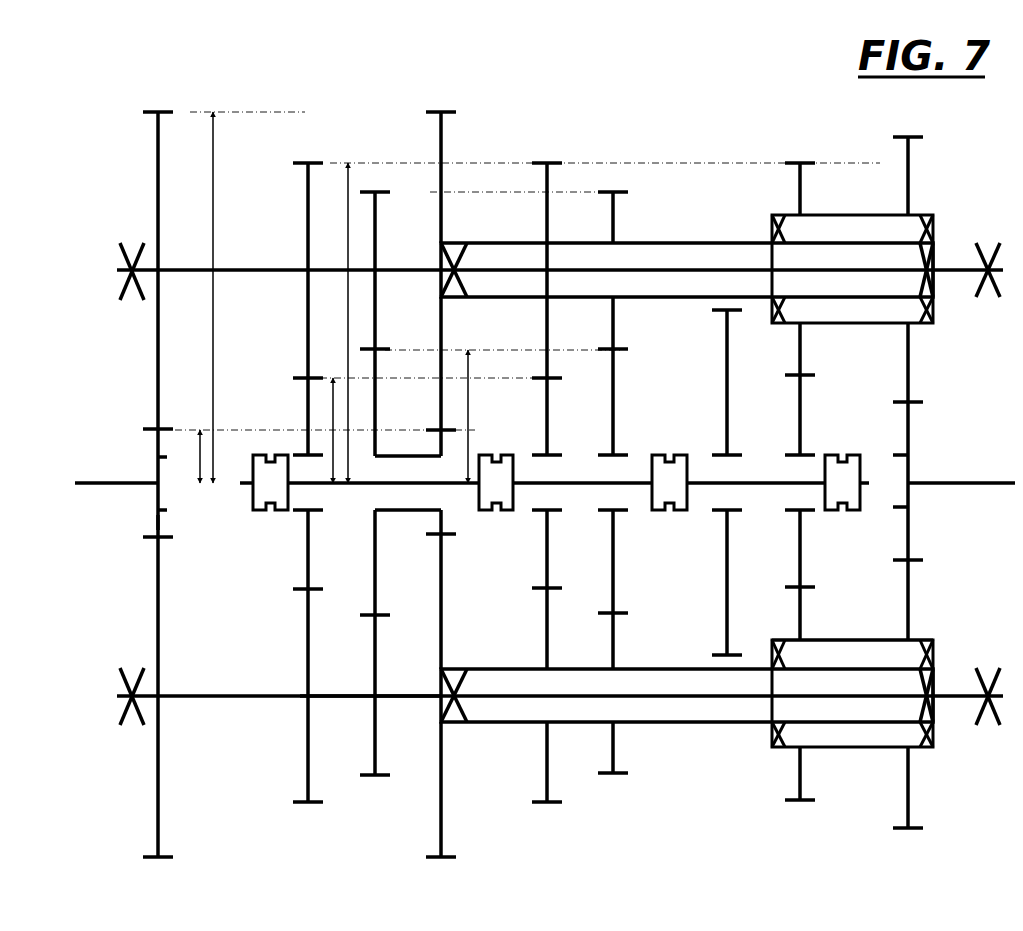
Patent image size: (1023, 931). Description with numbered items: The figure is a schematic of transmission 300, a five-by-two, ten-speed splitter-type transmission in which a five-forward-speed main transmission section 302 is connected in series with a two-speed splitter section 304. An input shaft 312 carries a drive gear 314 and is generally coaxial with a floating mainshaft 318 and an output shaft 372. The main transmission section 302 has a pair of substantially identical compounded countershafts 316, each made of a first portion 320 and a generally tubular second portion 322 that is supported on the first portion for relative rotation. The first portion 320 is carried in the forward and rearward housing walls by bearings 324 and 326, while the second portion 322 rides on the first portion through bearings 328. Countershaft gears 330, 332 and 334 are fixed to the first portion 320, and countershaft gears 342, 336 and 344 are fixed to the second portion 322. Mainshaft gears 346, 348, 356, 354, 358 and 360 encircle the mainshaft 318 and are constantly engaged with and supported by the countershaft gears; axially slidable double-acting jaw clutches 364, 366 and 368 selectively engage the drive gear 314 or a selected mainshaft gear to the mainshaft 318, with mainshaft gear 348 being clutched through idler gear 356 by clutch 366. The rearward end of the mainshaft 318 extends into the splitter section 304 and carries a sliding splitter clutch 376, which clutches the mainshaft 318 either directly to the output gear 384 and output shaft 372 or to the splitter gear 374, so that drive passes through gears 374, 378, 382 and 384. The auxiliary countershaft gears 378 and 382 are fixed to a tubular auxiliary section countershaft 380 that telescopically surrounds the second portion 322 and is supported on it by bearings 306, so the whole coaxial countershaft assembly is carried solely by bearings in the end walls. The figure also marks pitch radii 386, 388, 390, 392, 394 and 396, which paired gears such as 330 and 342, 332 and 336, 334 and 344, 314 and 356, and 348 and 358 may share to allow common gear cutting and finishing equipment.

The transmission 300 is at (614, 110).
The main transmission section 302 is at (350, 831).
The splitter section 304 is at (855, 828).
The bearings 306 is at (928, 640).
The input shaft 312 is at (117, 484).
The drive gear 314 is at (157, 522).
The compounded countershaft 316 is at (227, 708).
The floating mainshaft 318 is at (640, 480).
The first portion 320 is at (233, 695).
The second portion 322 is at (510, 668).
The bearing 324 is at (117, 270).
The bearing 326 is at (980, 290).
The bearings 328 is at (470, 708).
The countershaft gear 330 is at (158, 643).
The countershaft gear 332 is at (308, 762).
The countershaft gear 334 is at (375, 750).
The countershaft gear 336 is at (547, 773).
The countershaft gear 342 is at (441, 790).
The countershaft gear 344 is at (613, 732).
The mainshaft gear 346 is at (308, 570).
The mainshaft gear 348 is at (375, 589).
The mainshaft gear 354 is at (545, 563).
The mainshaft gear 356 is at (440, 522).
The mainshaft gear 358 is at (613, 575).
The mainshaft gear 360 is at (721, 376).
The jaw clutch 364 is at (268, 519).
The jaw clutch 366 is at (488, 519).
The jaw clutch 368 is at (680, 519).
The output shaft 372 is at (1003, 484).
The splitter gear 374 is at (800, 395).
The splitter clutch 376 is at (853, 519).
The auxiliary section countershaft gear 378 is at (802, 348).
The auxiliary section countershaft 380 is at (834, 639).
The auxiliary section countershaft gear 382 is at (907, 370).
The output gear 384 is at (908, 442).
The pitch radius 386 is at (213, 357).
The pitch radius 388 is at (348, 192).
The pitch radius 390 is at (415, 232).
The pitch radius 392 is at (197, 443).
The pitch radius 394 is at (333, 418).
The pitch radius 396 is at (468, 442).